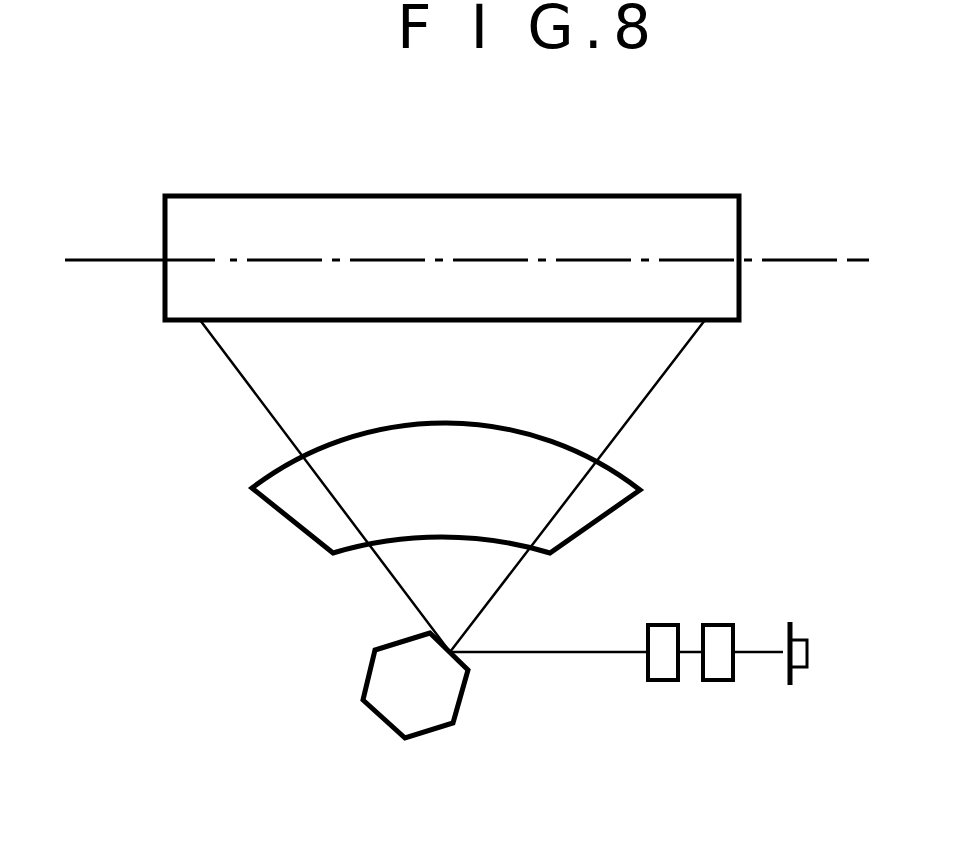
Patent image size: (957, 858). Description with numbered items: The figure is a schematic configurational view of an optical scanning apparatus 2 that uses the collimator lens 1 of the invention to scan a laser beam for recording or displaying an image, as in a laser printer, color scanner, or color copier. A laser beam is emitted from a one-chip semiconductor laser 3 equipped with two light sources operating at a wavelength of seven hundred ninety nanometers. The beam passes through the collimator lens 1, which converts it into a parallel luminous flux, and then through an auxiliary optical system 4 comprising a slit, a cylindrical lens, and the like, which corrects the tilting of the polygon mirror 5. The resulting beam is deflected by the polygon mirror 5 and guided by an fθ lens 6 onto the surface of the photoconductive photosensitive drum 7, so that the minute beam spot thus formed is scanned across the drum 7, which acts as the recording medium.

The collimator lens 1 is at (726, 682).
The optical scanning apparatus 2 is at (178, 514).
The one-chip semiconductor laser 3 is at (800, 668).
The auxiliary optical system 4 is at (660, 682).
The polygon mirror 5 is at (438, 735).
The fθ lens 6 is at (630, 478).
The photoconductive photosensitive drum 7 is at (620, 196).